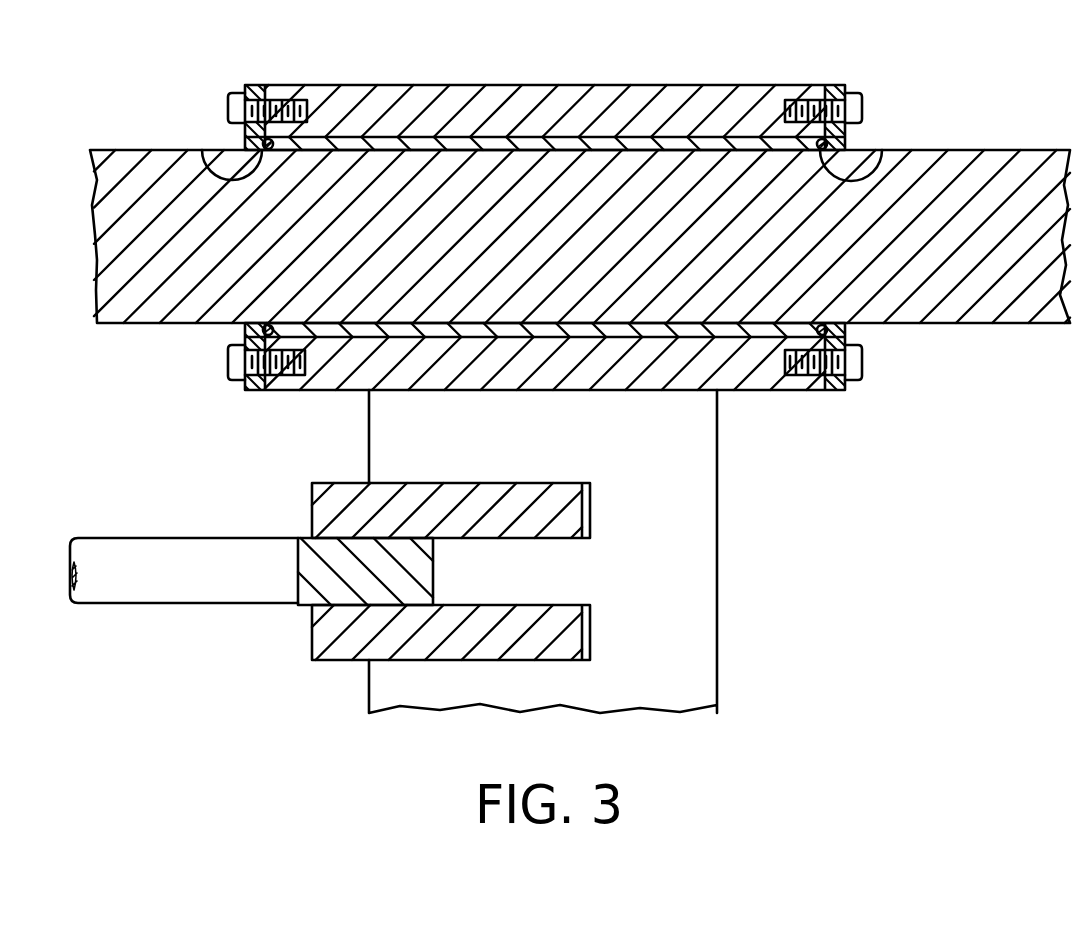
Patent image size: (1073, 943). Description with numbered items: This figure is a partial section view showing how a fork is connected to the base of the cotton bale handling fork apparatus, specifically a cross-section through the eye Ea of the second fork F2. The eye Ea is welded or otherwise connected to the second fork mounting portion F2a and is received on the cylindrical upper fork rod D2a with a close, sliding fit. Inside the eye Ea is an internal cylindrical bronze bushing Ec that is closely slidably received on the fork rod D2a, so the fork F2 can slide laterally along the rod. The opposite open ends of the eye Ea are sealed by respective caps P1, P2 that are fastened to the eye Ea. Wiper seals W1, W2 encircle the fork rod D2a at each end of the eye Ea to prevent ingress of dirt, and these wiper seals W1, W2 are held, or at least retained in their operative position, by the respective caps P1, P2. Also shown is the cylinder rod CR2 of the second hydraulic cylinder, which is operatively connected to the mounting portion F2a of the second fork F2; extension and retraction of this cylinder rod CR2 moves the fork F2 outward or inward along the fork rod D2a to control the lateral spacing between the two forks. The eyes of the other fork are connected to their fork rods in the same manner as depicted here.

The upper fork rod D2a is at (989, 315).
The first eye Ea is at (637, 100).
The internal cylindrical bronze bushing Ec is at (465, 143).
The cap P1 is at (253, 88).
The cap P2 is at (838, 88).
The wiper seal W1 is at (207, 148).
The wiper seal W2 is at (880, 152).
The second fork F2 is at (570, 551).
The second fork mounting portion F2a is at (717, 510).
The cylinder rod CR2 is at (153, 583).